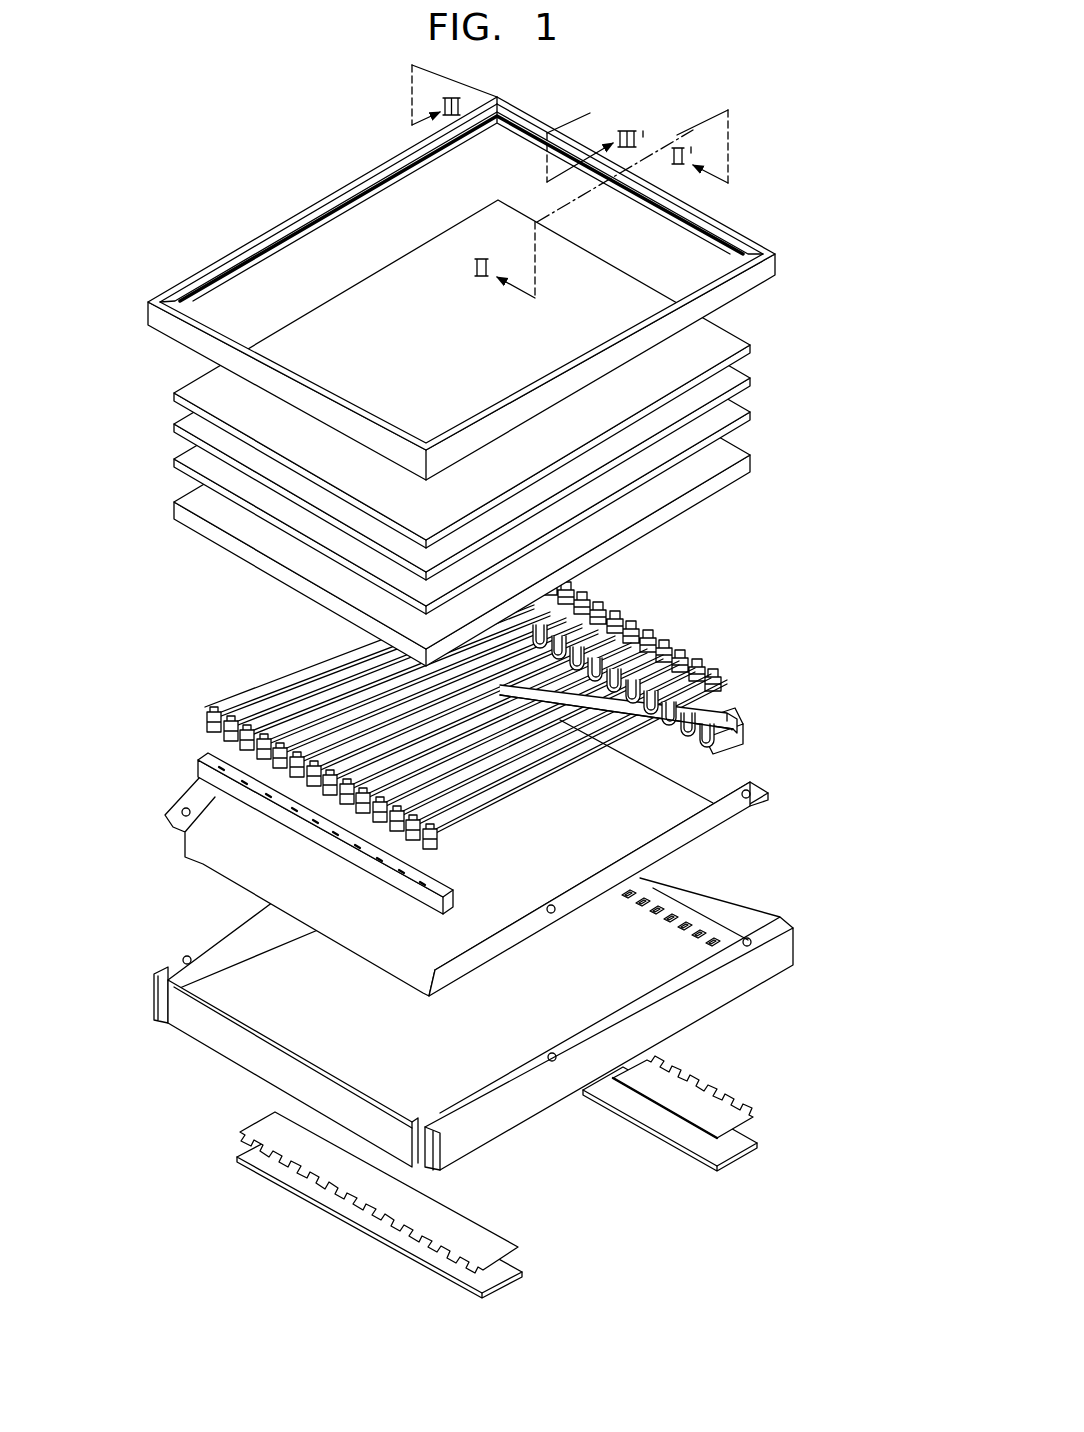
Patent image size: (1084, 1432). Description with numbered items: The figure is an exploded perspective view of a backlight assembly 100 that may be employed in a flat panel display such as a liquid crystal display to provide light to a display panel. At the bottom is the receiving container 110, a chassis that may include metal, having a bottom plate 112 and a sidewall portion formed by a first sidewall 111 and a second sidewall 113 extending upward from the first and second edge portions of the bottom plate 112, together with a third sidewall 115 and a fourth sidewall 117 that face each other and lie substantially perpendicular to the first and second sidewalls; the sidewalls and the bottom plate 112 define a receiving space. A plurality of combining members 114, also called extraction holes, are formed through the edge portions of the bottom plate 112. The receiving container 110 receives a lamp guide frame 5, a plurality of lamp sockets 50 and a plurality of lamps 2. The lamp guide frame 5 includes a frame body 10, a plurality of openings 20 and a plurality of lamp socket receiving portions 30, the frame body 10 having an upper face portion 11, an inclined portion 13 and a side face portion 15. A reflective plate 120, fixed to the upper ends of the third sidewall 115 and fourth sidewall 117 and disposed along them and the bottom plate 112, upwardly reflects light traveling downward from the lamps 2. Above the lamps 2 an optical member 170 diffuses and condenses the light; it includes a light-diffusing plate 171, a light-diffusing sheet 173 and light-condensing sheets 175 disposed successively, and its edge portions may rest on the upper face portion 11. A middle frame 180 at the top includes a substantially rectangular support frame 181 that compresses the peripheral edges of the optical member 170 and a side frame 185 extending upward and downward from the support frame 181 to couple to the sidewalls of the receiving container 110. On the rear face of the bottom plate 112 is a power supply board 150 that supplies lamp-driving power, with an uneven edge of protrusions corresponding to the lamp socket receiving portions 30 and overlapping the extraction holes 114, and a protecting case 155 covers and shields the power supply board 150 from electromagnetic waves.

The backlight assembly 100 is at (336, 95).
The middle frame 180 is at (845, 195).
The support frame 181 is at (737, 228).
The side frame 185 is at (767, 268).
The optical member 170 is at (110, 402).
The light-condensing sheets 175 is at (174, 427).
The light-diffusing sheet 173 is at (174, 459).
The light-diffusing plate 171 is at (174, 503).
The lamp 2 is at (268, 683).
The lamp guide frame 5 is at (840, 657).
The frame body 10 is at (802, 688).
The upper face portion 11 is at (730, 713).
The inclined portion 13 is at (733, 724).
The side face portion 15 is at (732, 737).
The openings 20 is at (710, 695).
The lamp socket receiving portion 30 is at (740, 748).
The lamp socket 50 is at (722, 660).
The reflective plate 120 is at (768, 790).
The receiving container 110 is at (805, 947).
The first sidewall 111 is at (752, 893).
The bottom plate 112 is at (260, 1007).
The second sidewall 113 is at (250, 1067).
The combining member 114 is at (667, 913).
The third sidewall 115 is at (510, 1120).
The fourth sidewall 117 is at (203, 950).
The power supply board 150 is at (757, 1118).
The protecting case 155 is at (757, 1147).